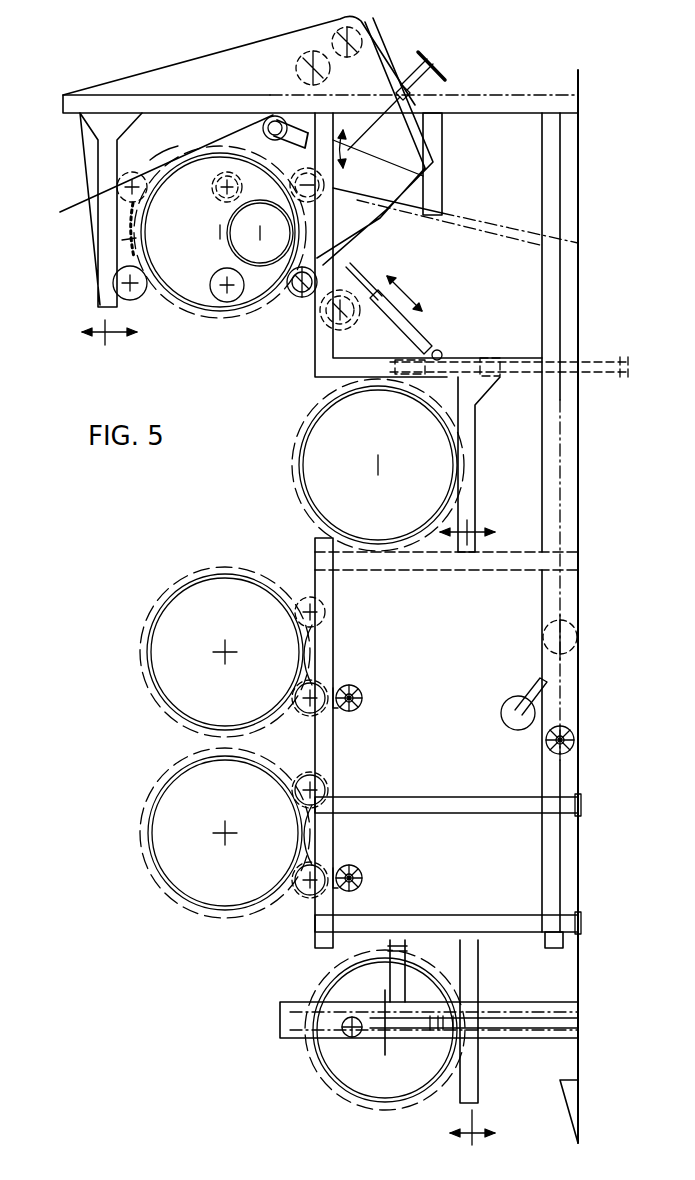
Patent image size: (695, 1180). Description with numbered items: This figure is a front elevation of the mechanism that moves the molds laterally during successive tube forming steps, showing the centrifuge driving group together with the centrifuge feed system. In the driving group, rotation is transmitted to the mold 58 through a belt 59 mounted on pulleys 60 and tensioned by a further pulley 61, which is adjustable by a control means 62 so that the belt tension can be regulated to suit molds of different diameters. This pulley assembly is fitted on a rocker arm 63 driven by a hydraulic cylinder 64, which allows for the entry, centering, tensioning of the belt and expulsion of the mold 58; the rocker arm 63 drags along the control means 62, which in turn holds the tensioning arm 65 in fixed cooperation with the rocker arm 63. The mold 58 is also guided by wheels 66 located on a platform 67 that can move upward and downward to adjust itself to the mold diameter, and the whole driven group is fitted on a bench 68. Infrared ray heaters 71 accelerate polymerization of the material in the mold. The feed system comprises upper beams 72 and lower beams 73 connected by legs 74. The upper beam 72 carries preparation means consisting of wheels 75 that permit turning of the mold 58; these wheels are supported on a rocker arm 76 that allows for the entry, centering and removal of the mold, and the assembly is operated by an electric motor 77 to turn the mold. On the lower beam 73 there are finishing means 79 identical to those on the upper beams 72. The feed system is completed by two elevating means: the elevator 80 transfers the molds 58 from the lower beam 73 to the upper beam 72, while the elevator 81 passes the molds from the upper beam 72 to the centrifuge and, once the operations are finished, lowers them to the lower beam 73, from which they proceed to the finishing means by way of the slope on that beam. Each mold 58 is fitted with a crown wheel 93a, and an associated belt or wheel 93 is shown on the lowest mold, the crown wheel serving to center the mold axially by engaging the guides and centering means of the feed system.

The mold 58 is at (237, 317).
The belt 59 is at (163, 150).
The pulleys 60 is at (130, 213).
The further pulley 61 is at (270, 113).
The control means 62 is at (447, 70).
The rocker arm 63 is at (395, 228).
The hydraulic cylinder 64 is at (427, 327).
The tensioning arm 65 is at (293, 165).
The wheels 66 is at (125, 192).
The platform 67 is at (97, 326).
The bench 68 is at (547, 100).
The infrared ray heaters 71 is at (125, 245).
The upper beams 72 is at (325, 905).
The lower beams 73 is at (563, 865).
The legs 74 is at (427, 805).
The wheels 75 is at (307, 718).
The rocker arm 76 is at (300, 797).
The electric motor 77 is at (365, 880).
The finishing means 79 is at (573, 684).
The elevator 80 is at (280, 1023).
The elevator 81 is at (467, 478).
The belt 93 is at (310, 1067).
The crown wheel 93a is at (185, 313).